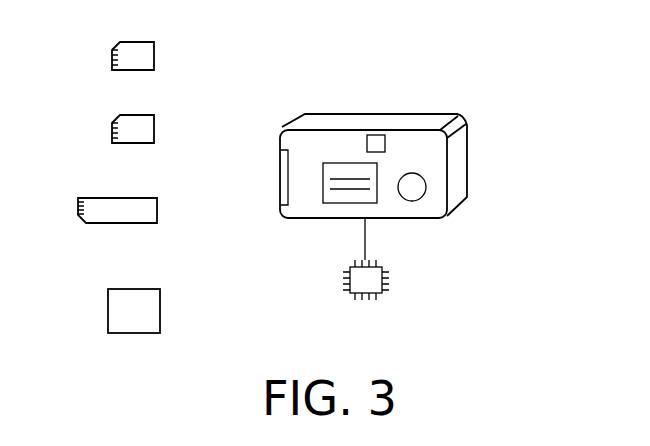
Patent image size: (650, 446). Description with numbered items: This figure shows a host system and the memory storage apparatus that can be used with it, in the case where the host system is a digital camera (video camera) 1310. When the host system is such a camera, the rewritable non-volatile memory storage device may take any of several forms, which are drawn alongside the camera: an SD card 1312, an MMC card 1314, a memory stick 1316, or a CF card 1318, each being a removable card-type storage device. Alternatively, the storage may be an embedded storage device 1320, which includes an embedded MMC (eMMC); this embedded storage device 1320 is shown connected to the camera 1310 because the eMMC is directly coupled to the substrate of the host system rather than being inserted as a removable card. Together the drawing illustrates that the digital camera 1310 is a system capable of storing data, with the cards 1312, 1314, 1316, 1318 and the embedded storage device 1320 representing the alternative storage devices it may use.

The digital camera 1310 is at (468, 152).
The SD card 1312 is at (154, 46).
The MMC card 1314 is at (154, 119).
The memory stick 1316 is at (157, 210).
The CF card 1318 is at (160, 303).
The embedded storage device 1320 is at (389, 282).